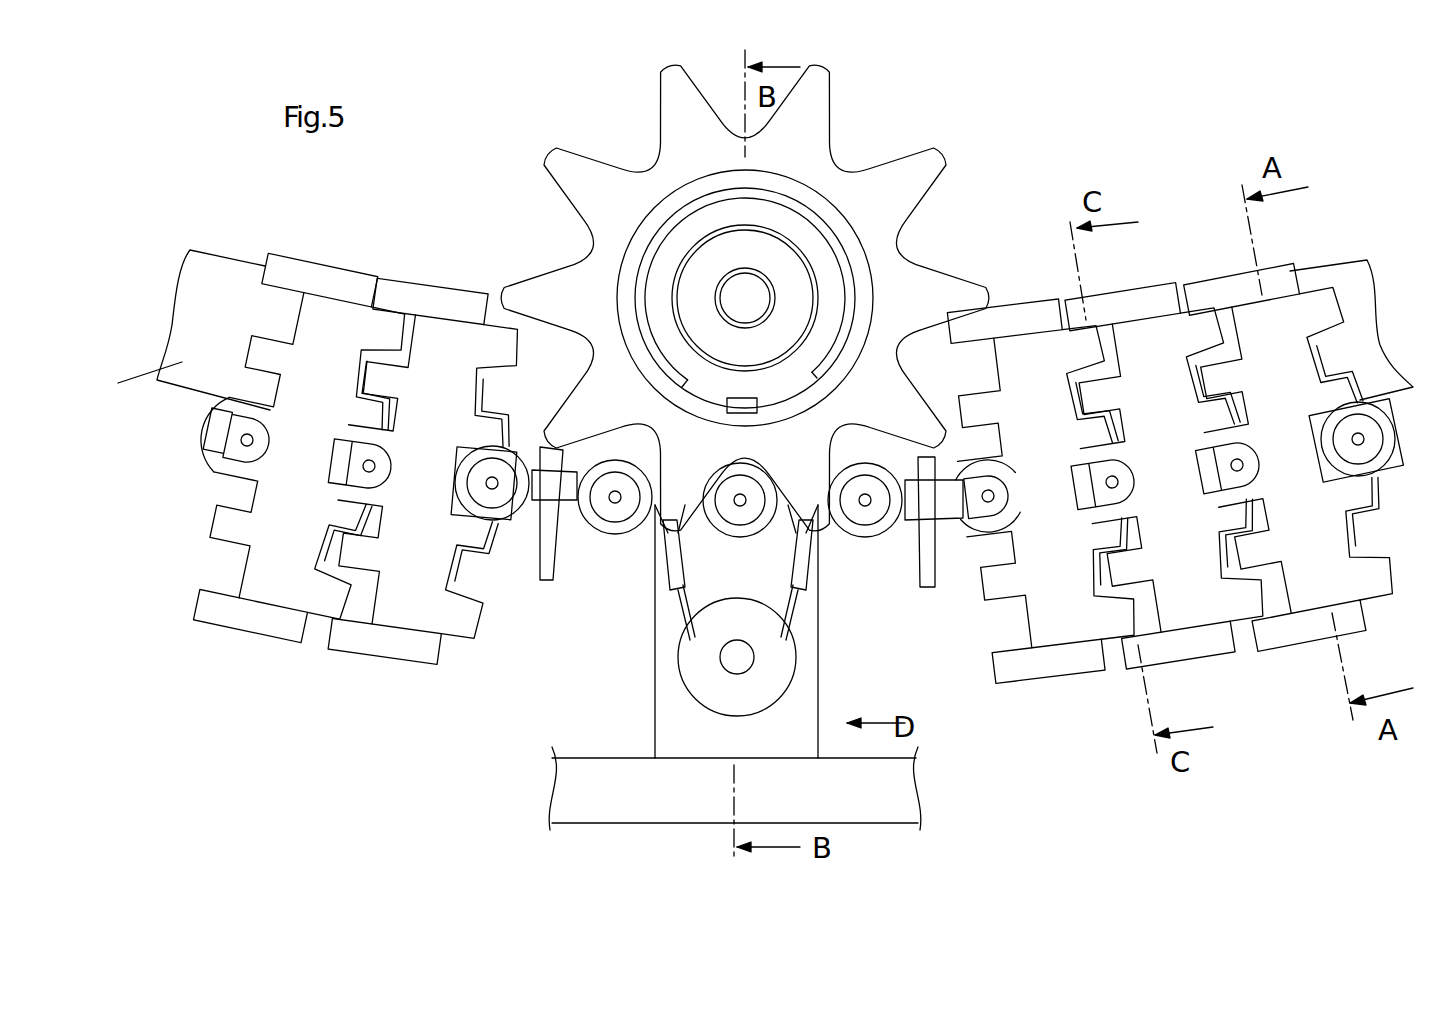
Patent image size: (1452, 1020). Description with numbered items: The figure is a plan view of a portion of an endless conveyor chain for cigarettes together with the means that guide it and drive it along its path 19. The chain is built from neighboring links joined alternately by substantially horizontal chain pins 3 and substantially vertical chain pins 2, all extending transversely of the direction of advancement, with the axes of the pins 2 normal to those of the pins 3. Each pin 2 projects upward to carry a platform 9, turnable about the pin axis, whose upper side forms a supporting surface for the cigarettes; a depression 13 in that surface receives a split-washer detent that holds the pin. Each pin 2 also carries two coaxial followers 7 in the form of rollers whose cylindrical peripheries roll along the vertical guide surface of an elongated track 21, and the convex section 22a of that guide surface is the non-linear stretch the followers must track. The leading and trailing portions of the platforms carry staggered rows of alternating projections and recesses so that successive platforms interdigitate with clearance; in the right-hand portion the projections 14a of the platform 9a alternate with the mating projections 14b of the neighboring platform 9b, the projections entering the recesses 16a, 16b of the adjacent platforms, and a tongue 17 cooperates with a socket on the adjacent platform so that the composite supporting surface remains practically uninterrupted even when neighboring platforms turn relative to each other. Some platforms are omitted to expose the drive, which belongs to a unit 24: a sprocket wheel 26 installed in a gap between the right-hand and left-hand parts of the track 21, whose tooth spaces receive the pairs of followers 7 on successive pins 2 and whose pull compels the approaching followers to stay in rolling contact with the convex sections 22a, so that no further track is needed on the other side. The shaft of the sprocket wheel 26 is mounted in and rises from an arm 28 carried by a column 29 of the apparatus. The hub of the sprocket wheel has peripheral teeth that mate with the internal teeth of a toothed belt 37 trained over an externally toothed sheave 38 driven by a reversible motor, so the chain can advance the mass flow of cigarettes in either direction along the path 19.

The vertical chain pin 2 is at (260, 450).
The horizontal chain pin 3 is at (922, 590).
The follower 7 is at (250, 473).
The platform 9 is at (312, 365).
The platform 9a is at (1197, 613).
The platform 9b is at (1050, 632).
The depression 13 is at (222, 456).
The projection 14a is at (1082, 327).
The projection 14b is at (1100, 443).
The tab 16a is at (1082, 310).
The tab 16b is at (1076, 598).
The tongue 17 is at (213, 433).
The path 19 is at (1392, 382).
The track 21 is at (205, 258).
The convex section 22a is at (125, 389).
The unit 24 is at (512, 670).
The sprocket wheel 26 is at (860, 130).
The arm 28 is at (667, 728).
The column 29 is at (550, 793).
The toothed belt 37 is at (676, 605).
The sheave 38 is at (693, 666).